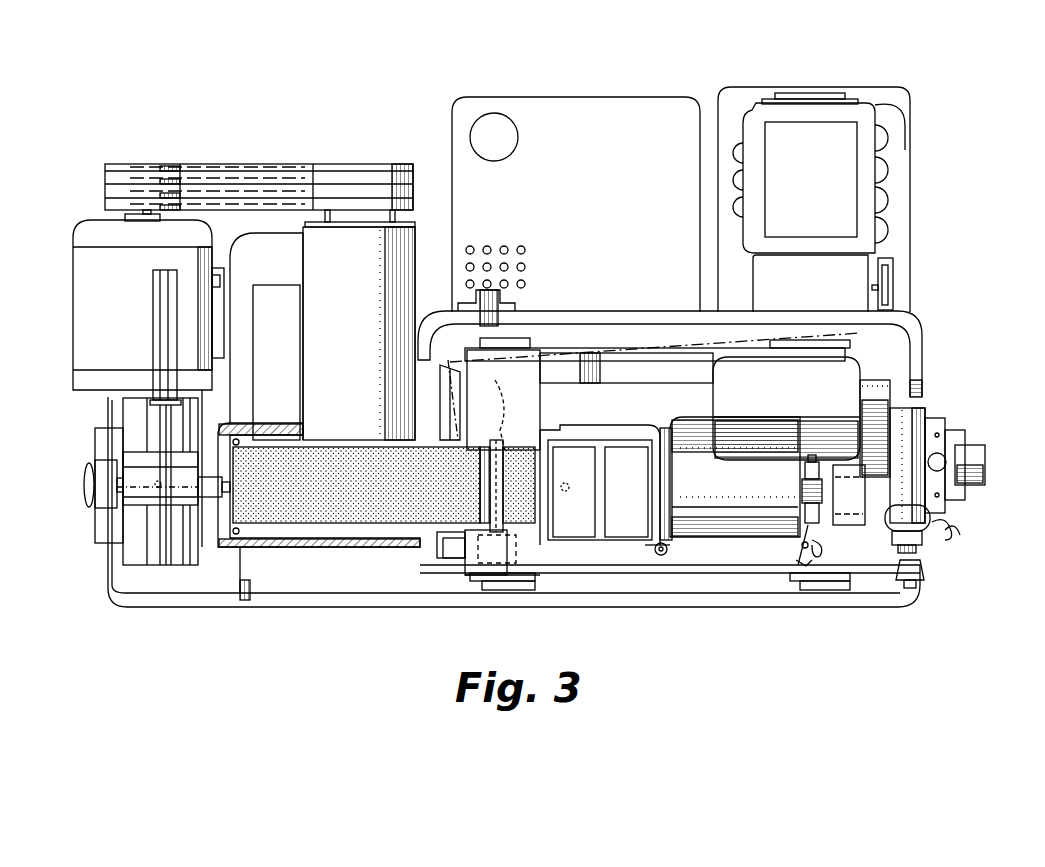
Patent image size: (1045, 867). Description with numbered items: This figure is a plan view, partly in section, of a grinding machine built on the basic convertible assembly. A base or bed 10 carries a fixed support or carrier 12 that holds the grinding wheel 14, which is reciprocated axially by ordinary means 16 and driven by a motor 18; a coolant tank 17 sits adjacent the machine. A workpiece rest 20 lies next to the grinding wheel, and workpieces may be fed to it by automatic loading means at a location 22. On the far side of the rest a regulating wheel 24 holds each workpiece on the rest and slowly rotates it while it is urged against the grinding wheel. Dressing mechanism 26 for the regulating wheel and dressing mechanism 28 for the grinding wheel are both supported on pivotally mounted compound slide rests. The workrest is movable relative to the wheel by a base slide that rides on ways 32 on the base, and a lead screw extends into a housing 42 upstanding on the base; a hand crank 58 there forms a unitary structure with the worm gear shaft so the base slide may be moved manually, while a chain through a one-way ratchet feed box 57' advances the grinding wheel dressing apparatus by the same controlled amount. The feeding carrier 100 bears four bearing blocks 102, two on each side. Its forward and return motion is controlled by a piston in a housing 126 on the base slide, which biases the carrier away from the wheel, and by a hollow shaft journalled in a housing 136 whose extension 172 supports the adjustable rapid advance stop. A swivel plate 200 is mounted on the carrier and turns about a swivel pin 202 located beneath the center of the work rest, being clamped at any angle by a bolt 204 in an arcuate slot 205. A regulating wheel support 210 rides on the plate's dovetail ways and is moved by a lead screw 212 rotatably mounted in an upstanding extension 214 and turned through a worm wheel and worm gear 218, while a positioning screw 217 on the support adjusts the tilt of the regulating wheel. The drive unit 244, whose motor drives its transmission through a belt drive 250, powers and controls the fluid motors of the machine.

The base 10 is at (282, 578).
The support 12 is at (243, 390).
The grinding wheel 14 is at (362, 510).
The reciprocating means 16 is at (385, 252).
The coolant tank 17 is at (578, 107).
The motor 18 is at (92, 272).
The workpiece rest 20 is at (492, 548).
The loading location 22 is at (495, 586).
The regulating wheel 24 is at (522, 458).
The regulating wheel dressing mechanism 26 is at (590, 472).
The grinding wheel dressing mechanism 28 is at (158, 486).
The ways 32 is at (450, 540).
The housing 42 is at (955, 432).
The one-way ratchet feed box 57' is at (75, 484).
The hand crank 58 is at (960, 535).
The carrier 100 is at (705, 575).
The bearing blocks 102 is at (520, 340).
The housing 126 is at (975, 468).
The housing 136 is at (912, 430).
The extension 172 is at (920, 518).
The swivel plate 200 is at (628, 368).
The swivel pin 202 is at (490, 400).
The bolt 204 is at (800, 548).
The arcuate slot 205 is at (795, 563).
The regulating wheel support 210 is at (687, 553).
The lead screw 212 is at (806, 470).
The upstanding extension 214 is at (890, 565).
The positioning screw 217 is at (660, 548).
The worm gear 218 is at (803, 497).
The drive unit 244 is at (845, 178).
The belt drive 250 is at (888, 282).